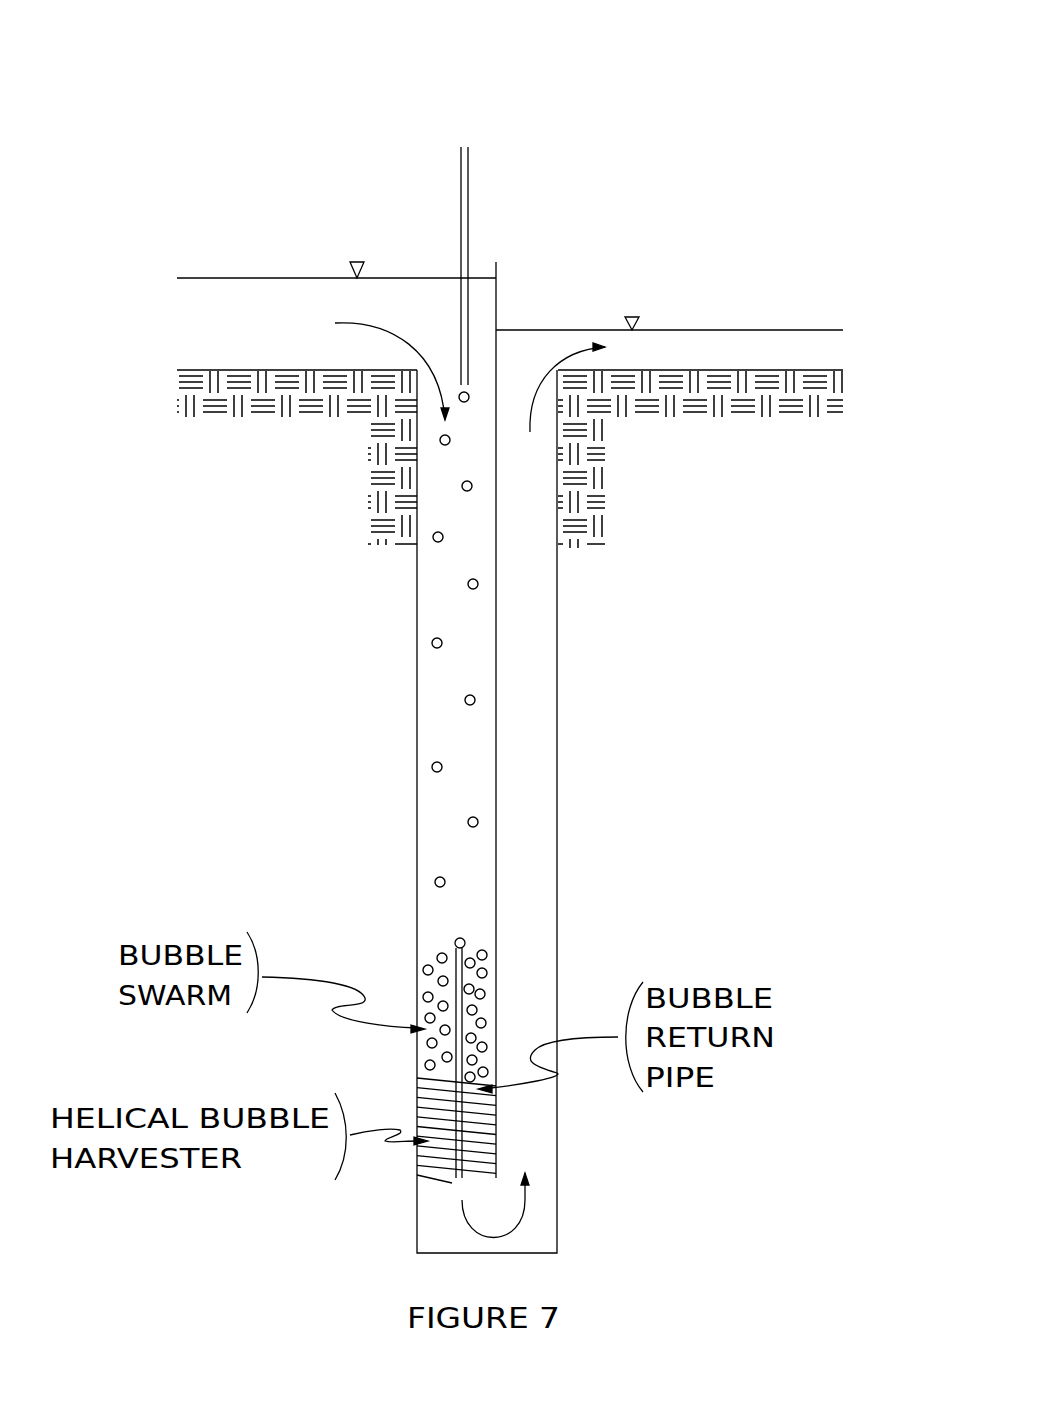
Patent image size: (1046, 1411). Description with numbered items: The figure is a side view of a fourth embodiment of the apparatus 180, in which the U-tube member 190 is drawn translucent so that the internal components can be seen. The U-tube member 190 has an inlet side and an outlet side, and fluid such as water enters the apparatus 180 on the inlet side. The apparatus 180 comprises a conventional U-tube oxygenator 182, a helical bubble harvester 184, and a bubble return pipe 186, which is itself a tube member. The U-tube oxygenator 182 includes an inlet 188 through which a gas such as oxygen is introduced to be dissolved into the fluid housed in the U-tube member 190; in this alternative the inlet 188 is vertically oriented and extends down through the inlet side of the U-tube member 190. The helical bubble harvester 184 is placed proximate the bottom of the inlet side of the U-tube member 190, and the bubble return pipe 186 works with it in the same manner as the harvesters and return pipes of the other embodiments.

The apparatus 180 is at (668, 227).
The U-tube oxygenator 182 is at (558, 657).
The helical bubble harvester 184 is at (417, 1115).
The bubble return pipe 186 is at (462, 1001).
The inlet 188 is at (468, 218).
The U-tube member 190 is at (417, 627).